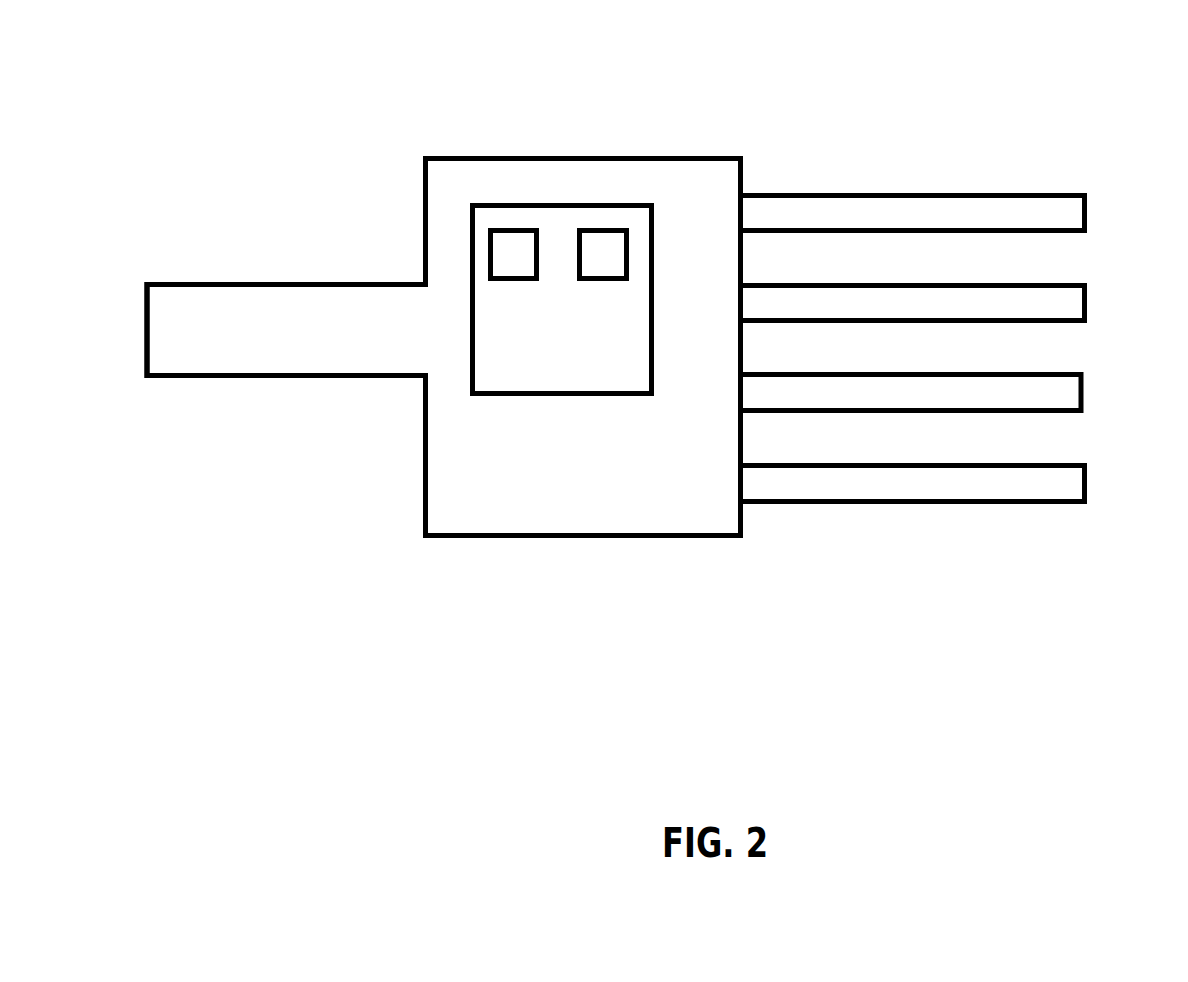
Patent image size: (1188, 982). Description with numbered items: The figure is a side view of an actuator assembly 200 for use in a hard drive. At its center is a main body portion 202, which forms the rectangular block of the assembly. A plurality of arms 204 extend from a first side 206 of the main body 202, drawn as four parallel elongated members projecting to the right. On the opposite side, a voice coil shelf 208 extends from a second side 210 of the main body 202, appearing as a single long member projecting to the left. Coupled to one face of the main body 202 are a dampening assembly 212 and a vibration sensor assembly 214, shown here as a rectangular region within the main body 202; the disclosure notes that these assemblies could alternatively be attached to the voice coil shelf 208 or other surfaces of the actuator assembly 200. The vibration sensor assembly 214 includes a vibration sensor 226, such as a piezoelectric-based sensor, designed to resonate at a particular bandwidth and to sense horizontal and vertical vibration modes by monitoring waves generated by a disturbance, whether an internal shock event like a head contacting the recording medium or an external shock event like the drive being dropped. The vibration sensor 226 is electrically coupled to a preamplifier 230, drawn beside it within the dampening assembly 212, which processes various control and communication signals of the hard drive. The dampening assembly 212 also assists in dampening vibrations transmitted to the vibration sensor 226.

The actuator assembly 200 is at (193, 32).
The main body portion 202 is at (690, 85).
The arms 204 is at (1057, 195).
The first side 206 is at (744, 518).
The voice coil shelf 208 is at (147, 342).
The second side 210 is at (427, 412).
The dampening assembly 212 is at (531, 377).
The vibration sensor assembly 214 is at (437, 235).
The vibration sensor 226 is at (522, 248).
The preamplifier 230 is at (611, 248).